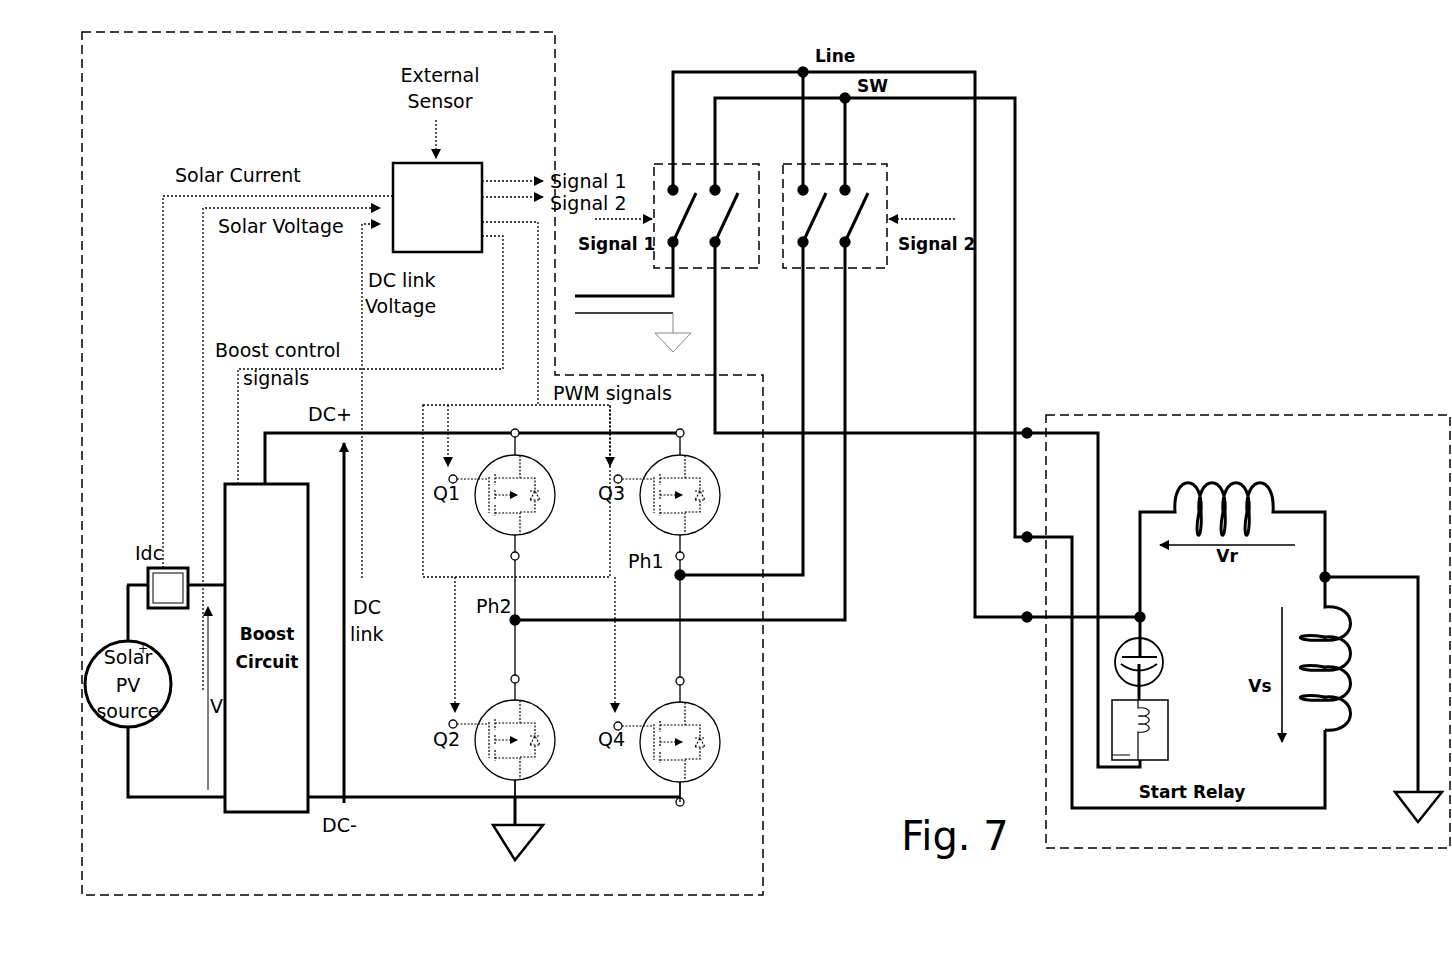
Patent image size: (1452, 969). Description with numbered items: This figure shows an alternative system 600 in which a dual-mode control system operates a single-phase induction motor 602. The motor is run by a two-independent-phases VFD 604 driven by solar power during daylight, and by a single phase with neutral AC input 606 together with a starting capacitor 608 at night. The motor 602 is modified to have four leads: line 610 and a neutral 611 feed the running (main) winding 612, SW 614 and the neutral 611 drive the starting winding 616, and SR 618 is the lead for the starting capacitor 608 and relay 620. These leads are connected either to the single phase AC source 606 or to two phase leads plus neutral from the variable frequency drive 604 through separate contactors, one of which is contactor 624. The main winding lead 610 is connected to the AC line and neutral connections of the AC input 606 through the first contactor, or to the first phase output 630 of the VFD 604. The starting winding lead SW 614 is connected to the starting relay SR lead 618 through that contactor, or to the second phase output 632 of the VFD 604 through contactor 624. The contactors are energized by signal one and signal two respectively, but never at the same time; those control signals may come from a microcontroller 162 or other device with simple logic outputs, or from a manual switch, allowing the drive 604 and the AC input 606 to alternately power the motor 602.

The alternative system 600 is at (1297, 80).
The single-phase induction motor 602 is at (1248, 631).
The two-independent-phases VFD 604 is at (422, 463).
The controller 162 is at (437, 207).
The single phase with neutral AC input 606 is at (684, 304).
The starting capacitor 608 is at (1118, 664).
The line 610 is at (975, 600).
The neutral 611 is at (1400, 810).
The running (main) winding 612 is at (1278, 496).
The SW 614 is at (1015, 518).
The starting winding 616 is at (1327, 735).
The SR 618 is at (945, 437).
The relay 620 is at (718, 183).
The contactor 624 is at (867, 218).
The PH1 630 is at (805, 347).
The Ph2 632 is at (848, 372).